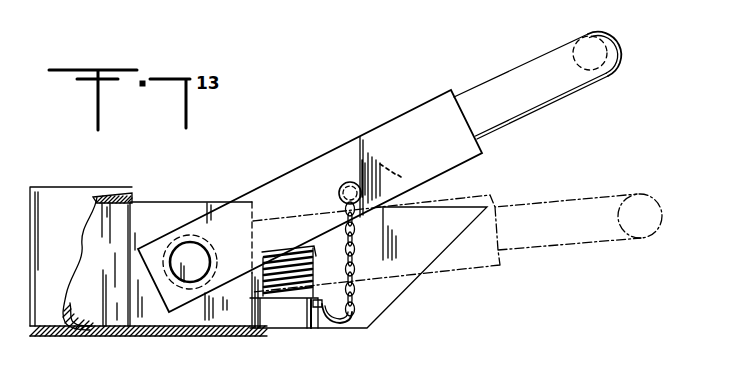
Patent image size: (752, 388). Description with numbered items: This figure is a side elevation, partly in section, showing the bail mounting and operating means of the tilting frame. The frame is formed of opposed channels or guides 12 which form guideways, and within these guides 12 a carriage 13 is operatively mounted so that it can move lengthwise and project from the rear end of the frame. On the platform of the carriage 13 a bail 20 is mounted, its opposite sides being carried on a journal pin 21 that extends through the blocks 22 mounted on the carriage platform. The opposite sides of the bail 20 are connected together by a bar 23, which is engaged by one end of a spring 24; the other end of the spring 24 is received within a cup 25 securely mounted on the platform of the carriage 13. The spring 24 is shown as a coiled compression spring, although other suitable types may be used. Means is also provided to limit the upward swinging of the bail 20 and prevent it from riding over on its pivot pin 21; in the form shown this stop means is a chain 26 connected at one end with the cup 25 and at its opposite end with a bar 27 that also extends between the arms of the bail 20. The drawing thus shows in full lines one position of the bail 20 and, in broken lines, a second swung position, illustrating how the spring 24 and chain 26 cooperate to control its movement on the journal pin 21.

The channels or guides 12 is at (77, 203).
The carriage 13 is at (222, 201).
The bail 20 is at (621, 70).
The journal pin 21 is at (183, 248).
The blocks 22 is at (186, 210).
The bar 23 is at (280, 252).
The spring 24 is at (307, 259).
The cup 25 is at (303, 318).
The chain 26 is at (357, 256).
The bar 27 is at (347, 186).